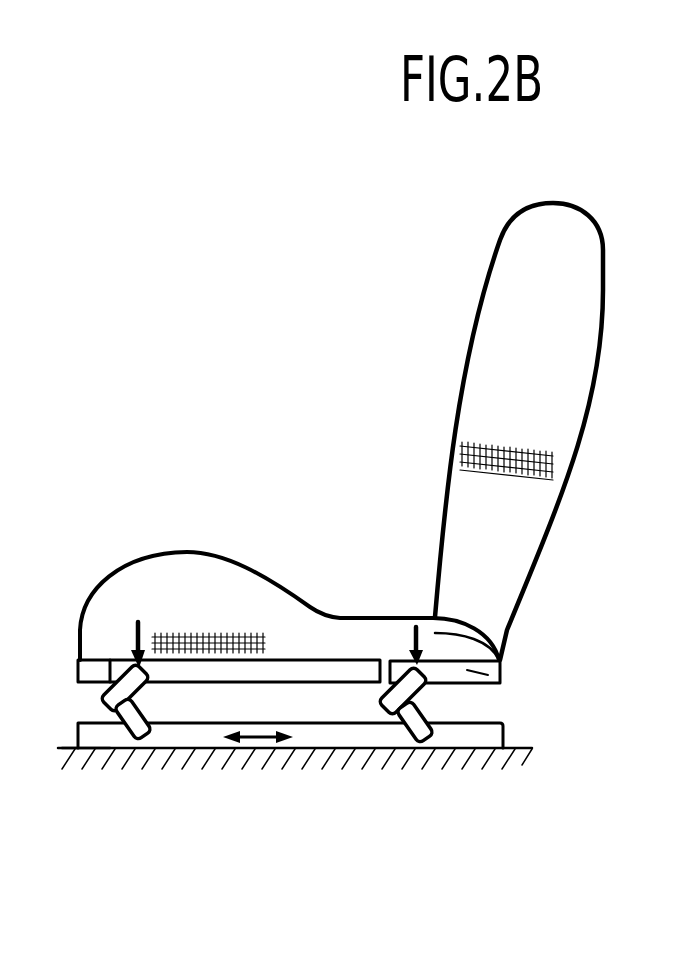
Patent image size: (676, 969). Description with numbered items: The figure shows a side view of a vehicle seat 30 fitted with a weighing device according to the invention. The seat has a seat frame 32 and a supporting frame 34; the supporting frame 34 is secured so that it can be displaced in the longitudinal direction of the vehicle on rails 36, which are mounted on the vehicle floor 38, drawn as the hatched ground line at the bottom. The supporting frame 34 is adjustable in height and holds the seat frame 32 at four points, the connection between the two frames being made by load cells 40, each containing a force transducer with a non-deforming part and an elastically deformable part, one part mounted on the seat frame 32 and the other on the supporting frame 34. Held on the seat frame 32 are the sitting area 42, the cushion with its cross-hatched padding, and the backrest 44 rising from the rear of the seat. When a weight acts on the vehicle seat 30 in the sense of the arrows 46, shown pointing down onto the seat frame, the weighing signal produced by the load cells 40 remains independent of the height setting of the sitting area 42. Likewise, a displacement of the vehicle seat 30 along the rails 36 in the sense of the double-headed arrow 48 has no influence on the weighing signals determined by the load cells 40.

The vehicle seat 30 is at (380, 303).
The seat frame 32 is at (500, 683).
The supporting frame 34 is at (140, 693).
The rails 36 is at (120, 740).
The vehicle floor 38 is at (95, 751).
The load cells 40 is at (390, 673).
The sitting area 42 is at (260, 560).
The backrest 44 is at (558, 551).
The arrows 46 is at (503, 643).
The double-headed arrow 48 is at (257, 750).